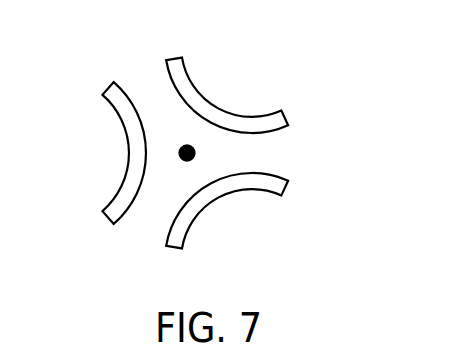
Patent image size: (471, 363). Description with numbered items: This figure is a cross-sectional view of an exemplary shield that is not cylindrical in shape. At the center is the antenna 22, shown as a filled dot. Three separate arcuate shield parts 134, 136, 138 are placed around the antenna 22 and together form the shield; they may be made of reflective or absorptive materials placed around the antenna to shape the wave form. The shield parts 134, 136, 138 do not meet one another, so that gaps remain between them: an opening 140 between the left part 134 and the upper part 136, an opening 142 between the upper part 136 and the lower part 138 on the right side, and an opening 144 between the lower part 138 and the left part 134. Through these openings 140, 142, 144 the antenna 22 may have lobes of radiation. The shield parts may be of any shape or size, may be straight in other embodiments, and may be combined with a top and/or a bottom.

The antenna 22 is at (192, 148).
The shield part 134 is at (104, 93).
The shield part 136 is at (190, 64).
The shield part 138 is at (277, 193).
The opening 140 is at (147, 71).
The opening 142 is at (294, 154).
The opening 144 is at (147, 236).